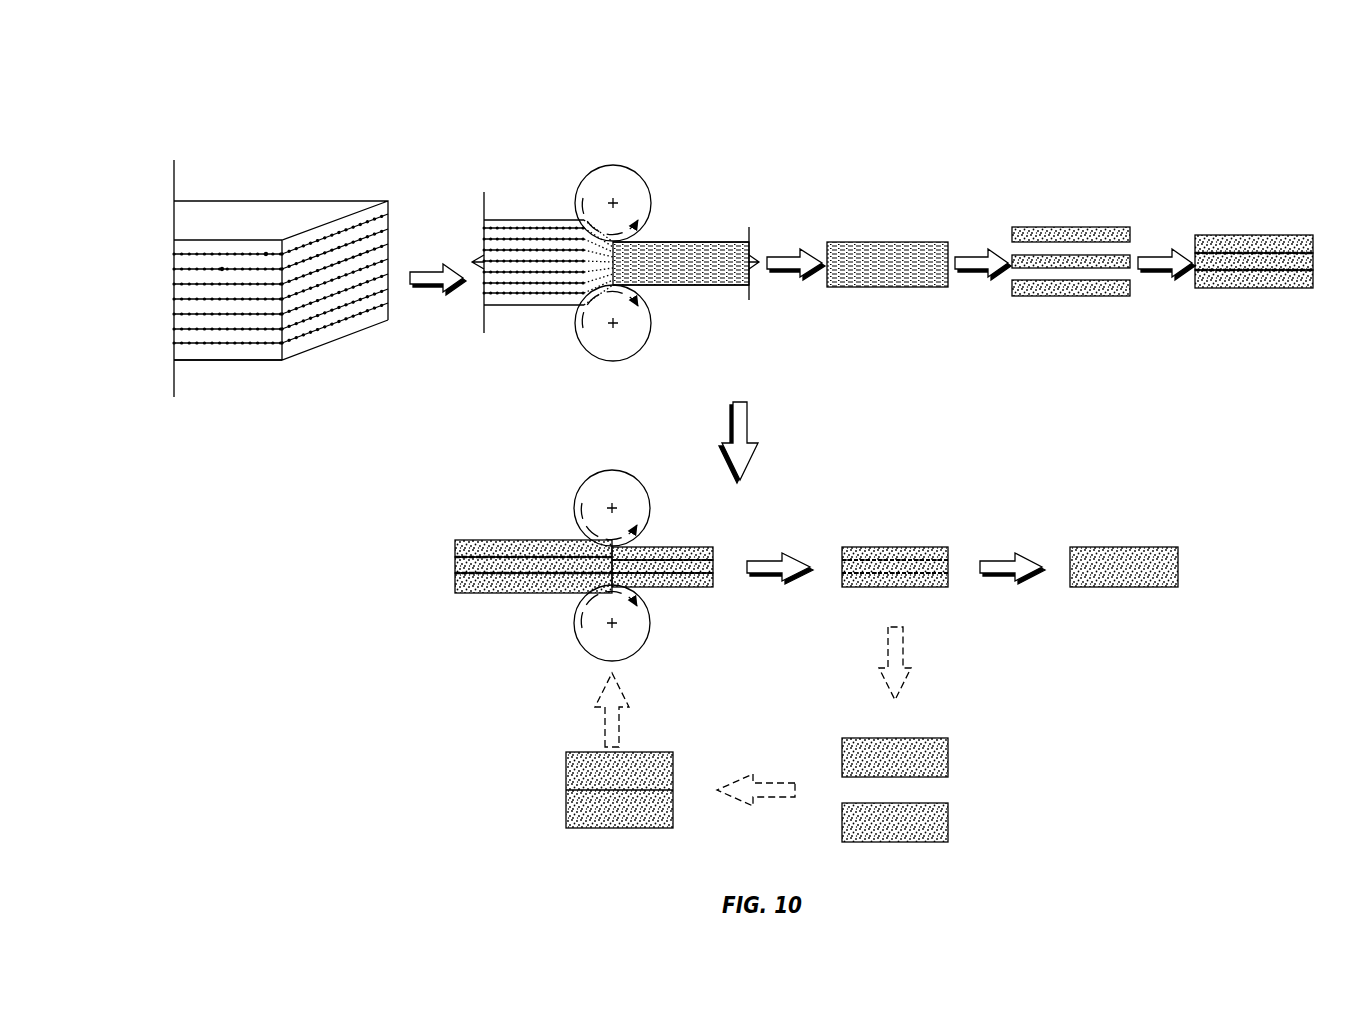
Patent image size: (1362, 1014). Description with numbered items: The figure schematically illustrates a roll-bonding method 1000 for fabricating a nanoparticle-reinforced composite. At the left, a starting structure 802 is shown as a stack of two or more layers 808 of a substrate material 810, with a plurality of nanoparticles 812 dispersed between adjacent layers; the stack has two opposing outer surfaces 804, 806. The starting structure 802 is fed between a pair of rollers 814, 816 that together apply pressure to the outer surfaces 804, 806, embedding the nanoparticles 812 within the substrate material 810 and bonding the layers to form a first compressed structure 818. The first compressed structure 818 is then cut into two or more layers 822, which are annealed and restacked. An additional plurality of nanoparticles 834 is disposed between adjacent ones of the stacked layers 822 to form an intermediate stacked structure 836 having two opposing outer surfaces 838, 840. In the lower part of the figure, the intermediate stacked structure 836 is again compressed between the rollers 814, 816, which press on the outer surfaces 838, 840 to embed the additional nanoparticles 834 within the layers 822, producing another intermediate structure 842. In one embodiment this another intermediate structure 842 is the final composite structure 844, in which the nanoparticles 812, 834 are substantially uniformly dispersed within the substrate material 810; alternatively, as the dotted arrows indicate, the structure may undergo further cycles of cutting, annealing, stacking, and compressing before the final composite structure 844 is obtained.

The roll-bonding method 1000 is at (1232, 97).
The starting structure 802 is at (295, 118).
The outer surface 804 is at (212, 208).
The outer surface 806 is at (300, 355).
The layers 808 is at (186, 299).
The substrate material 810 is at (390, 274).
The nanoparticles 812 is at (258, 330).
The roller 814 is at (595, 178).
The roller 816 is at (595, 350).
The first compressed structure 818 is at (888, 226).
The layers 822 is at (1063, 260).
The additional nanoparticles 834 is at (1225, 250).
The intermediate stacked structure 836 is at (1256, 218).
The outer surface 838 is at (1270, 235).
The outer surface 840 is at (1265, 290).
The another intermediate structure 842 is at (919, 527).
The final composite structure 844 is at (1164, 527).